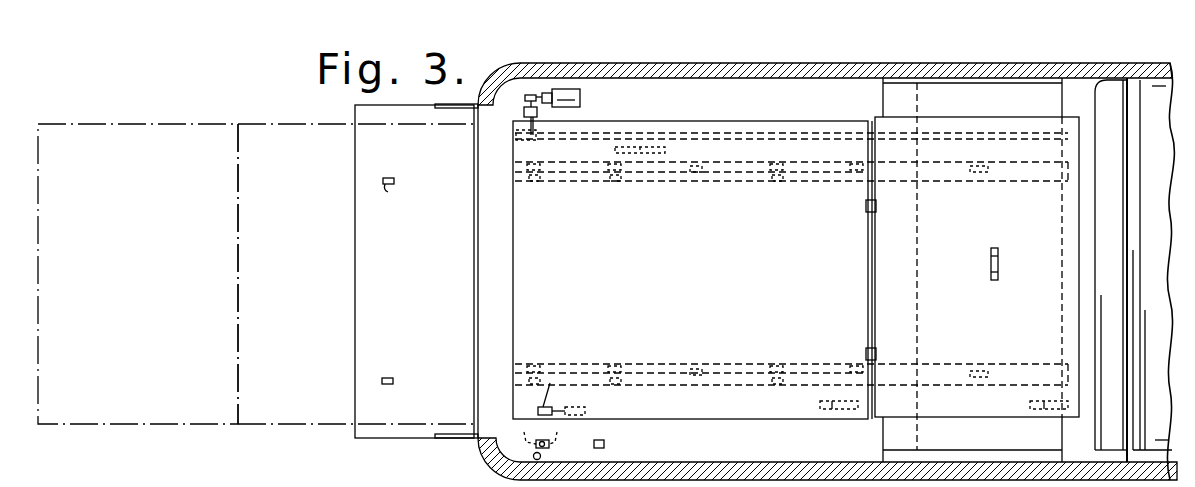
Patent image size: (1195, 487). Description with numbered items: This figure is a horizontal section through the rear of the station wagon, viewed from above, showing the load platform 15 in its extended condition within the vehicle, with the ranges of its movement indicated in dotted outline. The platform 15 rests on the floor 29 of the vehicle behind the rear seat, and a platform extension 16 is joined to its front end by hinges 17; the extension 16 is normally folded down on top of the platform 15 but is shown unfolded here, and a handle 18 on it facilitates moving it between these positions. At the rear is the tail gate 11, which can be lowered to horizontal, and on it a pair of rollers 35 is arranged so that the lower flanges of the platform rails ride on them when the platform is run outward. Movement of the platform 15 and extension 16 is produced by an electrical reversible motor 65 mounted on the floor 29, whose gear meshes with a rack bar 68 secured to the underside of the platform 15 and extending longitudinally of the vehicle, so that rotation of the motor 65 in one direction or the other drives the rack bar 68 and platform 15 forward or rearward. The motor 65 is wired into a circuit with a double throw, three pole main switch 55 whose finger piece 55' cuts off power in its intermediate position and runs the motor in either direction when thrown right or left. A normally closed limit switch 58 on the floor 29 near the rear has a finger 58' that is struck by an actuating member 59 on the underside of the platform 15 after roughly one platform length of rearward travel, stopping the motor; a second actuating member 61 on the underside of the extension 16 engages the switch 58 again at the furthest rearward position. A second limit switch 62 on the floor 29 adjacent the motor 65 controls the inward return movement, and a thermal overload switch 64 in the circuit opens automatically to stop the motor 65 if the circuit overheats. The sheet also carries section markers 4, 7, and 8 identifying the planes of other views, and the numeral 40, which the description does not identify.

The floor 29 is at (829, 88).
The tail gate 11 is at (388, 441).
The rollers 35 is at (390, 378).
The load platform 15 is at (757, 276).
The platform extension 16 is at (1016, 231).
The rack bar 68 is at (680, 135).
The electrical reversible motor 65 is at (580, 98).
The second limit switch 62 is at (660, 158).
The section line 8- 8 is at (503, 150).
The hinges 17 is at (866, 206).
The handle 18 is at (995, 282).
The finger 58' is at (567, 358).
The limit switch 58 is at (585, 400).
The actuating member 59 is at (833, 412).
The second actuating member 61 is at (1040, 412).
The thermal overload switch 64 is at (604, 444).
The main switch 55 is at (564, 455).
The finger piece 55' is at (573, 452).
The indicator light 40 is at (535, 459).
The section line 7- 7 is at (486, 416).
The section line 4- 4 is at (336, 394).